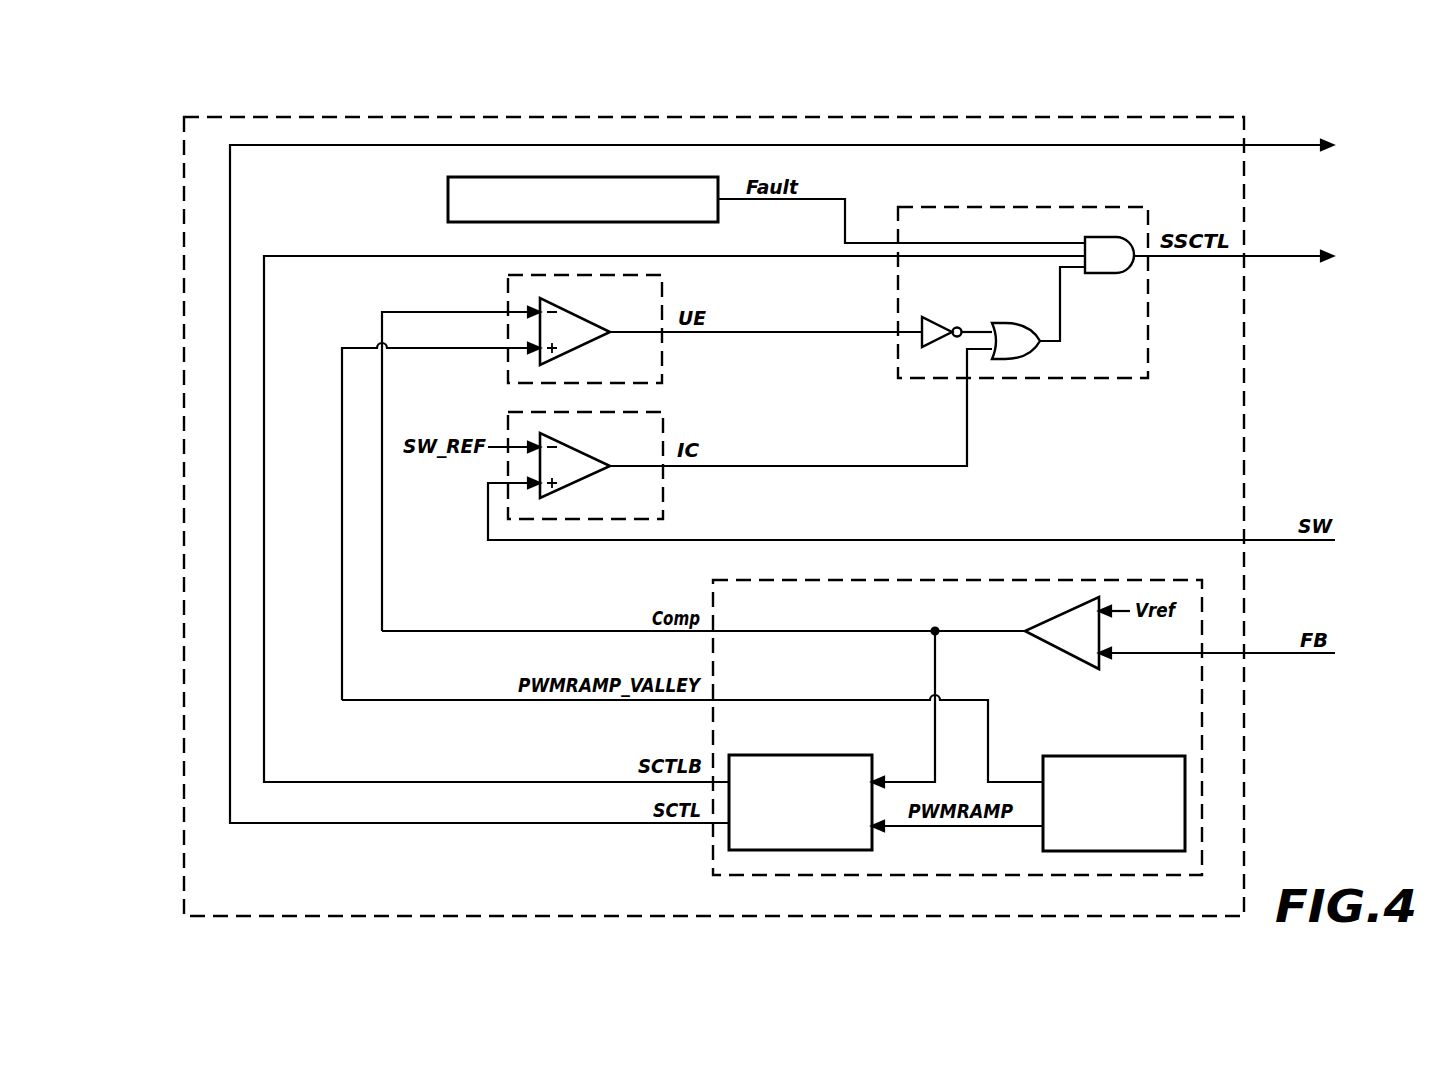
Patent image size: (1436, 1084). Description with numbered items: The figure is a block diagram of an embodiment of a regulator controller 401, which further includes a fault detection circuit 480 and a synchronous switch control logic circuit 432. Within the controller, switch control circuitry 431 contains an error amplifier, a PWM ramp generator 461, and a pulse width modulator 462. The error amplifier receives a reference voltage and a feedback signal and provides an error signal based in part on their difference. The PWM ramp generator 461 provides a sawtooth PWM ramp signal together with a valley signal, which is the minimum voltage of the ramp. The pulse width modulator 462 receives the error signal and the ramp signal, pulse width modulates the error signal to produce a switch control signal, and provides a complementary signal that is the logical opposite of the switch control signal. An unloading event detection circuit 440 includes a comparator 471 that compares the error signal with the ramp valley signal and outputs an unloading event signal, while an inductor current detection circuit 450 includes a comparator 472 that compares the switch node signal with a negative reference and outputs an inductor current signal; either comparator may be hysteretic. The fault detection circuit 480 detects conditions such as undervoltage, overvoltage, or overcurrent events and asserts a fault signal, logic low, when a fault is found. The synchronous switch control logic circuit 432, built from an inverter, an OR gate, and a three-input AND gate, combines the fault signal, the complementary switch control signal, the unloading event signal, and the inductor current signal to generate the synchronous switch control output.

The regulator controller 401 is at (1244, 193).
The fault detection circuit 480 is at (448, 200).
The synchronous switch control logic circuit 432 is at (950, 207).
The unloading event detection circuit 440 is at (662, 300).
The comparator 471 is at (576, 312).
The inductor current detection circuit 450 is at (663, 437).
The comparator 472 is at (576, 447).
The switch control circuitry 431 is at (712, 603).
The pulse width modulator 462 is at (768, 755).
The PWM ramp generator 461 is at (1086, 756).